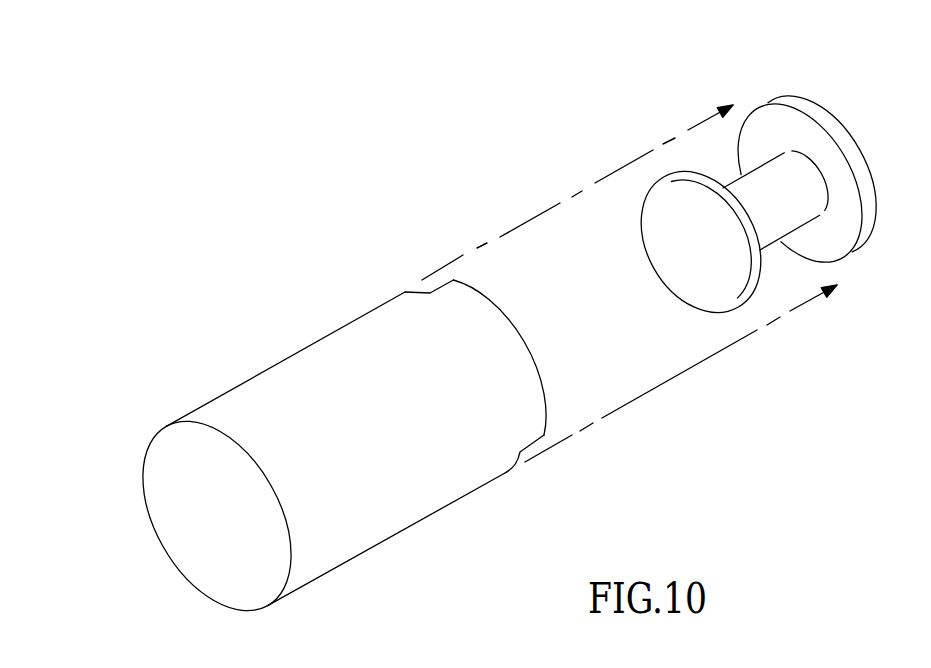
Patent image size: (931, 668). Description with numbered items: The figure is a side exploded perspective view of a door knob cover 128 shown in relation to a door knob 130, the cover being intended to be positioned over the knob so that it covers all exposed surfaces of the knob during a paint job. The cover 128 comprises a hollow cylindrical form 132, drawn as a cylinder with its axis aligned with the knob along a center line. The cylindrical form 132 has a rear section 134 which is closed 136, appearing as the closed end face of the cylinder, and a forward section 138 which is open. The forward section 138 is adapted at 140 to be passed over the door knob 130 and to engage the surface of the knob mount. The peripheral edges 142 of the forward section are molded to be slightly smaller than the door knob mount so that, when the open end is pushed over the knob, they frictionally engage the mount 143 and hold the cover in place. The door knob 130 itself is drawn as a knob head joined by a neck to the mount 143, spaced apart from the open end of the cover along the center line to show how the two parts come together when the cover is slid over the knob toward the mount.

The door knob cover 128 is at (172, 602).
The door knob 130 is at (710, 150).
The hollow cylindrical form 132 is at (412, 485).
The rear section 134 is at (153, 397).
The closed end 136 is at (193, 525).
The forward section 138 is at (543, 362).
The adapted opening 140 is at (548, 459).
The peripheral edges 142 is at (430, 263).
The door knob mount 143 is at (807, 110).